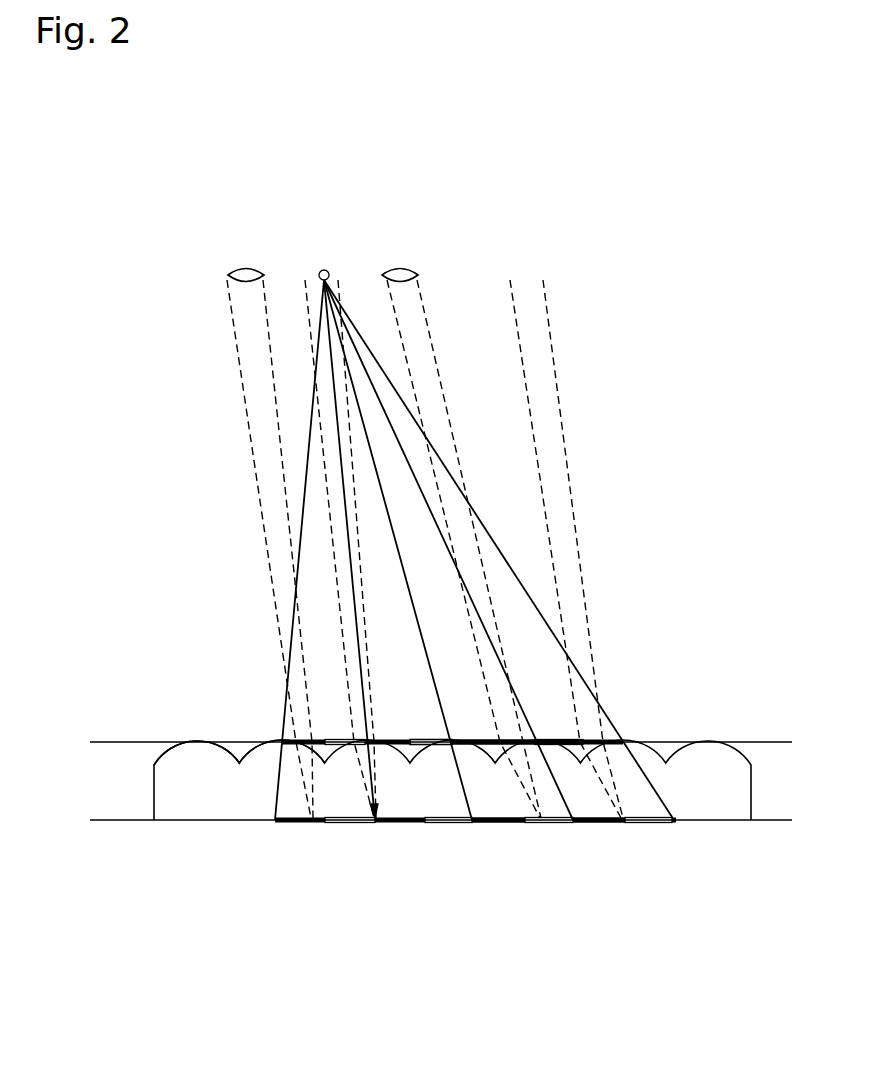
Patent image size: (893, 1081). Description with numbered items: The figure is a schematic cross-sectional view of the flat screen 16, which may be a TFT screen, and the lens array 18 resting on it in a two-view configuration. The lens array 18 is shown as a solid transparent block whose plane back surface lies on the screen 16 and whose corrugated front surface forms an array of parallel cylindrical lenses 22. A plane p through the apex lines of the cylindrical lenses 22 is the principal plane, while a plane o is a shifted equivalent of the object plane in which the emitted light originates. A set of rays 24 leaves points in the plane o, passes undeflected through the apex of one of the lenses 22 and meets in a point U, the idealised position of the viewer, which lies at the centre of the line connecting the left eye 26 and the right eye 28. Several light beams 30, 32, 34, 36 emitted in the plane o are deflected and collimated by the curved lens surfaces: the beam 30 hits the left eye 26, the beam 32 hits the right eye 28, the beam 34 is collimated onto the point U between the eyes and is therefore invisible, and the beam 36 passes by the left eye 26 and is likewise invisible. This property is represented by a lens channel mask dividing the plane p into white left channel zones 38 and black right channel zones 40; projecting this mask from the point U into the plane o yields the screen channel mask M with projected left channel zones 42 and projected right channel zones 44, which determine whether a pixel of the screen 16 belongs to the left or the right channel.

The screen 16 is at (231, 821).
The lens array 18 is at (154, 796).
The cylindrical lenses 22 is at (196, 740).
The rays 24 is at (283, 740).
The left eye 26 is at (402, 267).
The right eye 28 is at (243, 267).
The light beam 30 is at (430, 330).
The light beam 32 is at (240, 355).
The light beam 34 is at (337, 560).
The light beam 36 is at (558, 383).
The left channel zones 38 is at (428, 740).
The right channel zones 40 is at (467, 740).
The projected left channel zones 42 is at (450, 825).
The projected right channel zones 44 is at (605, 825).
The point U is at (326, 269).
The screen channel mask M is at (512, 822).
The principal plane p is at (782, 740).
The object plane o is at (763, 823).